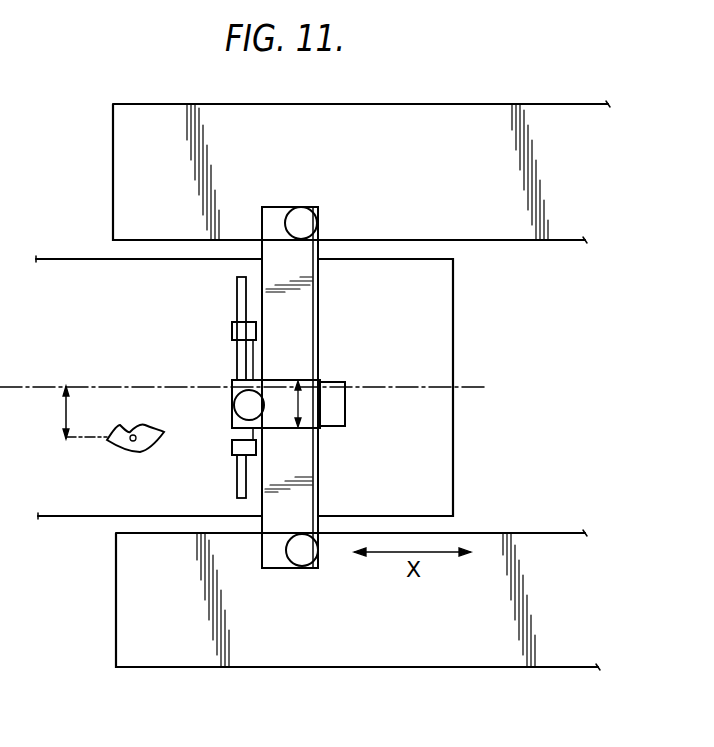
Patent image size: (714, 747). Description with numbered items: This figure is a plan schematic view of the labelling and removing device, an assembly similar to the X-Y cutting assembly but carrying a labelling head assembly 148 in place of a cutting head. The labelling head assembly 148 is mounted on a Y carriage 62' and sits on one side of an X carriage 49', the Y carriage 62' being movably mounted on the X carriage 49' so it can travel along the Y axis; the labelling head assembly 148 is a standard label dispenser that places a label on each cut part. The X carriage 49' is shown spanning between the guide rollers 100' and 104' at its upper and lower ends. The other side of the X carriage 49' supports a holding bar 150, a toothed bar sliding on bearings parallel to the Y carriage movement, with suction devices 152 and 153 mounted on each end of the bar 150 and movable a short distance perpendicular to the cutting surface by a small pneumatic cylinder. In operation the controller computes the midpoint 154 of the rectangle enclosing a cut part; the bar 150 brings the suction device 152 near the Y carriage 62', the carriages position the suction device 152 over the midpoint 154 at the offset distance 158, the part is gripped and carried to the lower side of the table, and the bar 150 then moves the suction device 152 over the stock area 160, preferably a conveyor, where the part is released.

The upper roller 100' is at (310, 200).
The lower roller 104' is at (302, 577).
The X carriage 49' is at (320, 387).
The Y carriage 62' is at (352, 409).
The labelling head assembly 148 is at (332, 428).
The holding bar 150 is at (237, 353).
The suction device 152 is at (237, 286).
The suction device 153 is at (238, 489).
The midpoint 154 is at (134, 445).
The offset dimension 158 is at (63, 412).
The stock area 160 is at (380, 655).